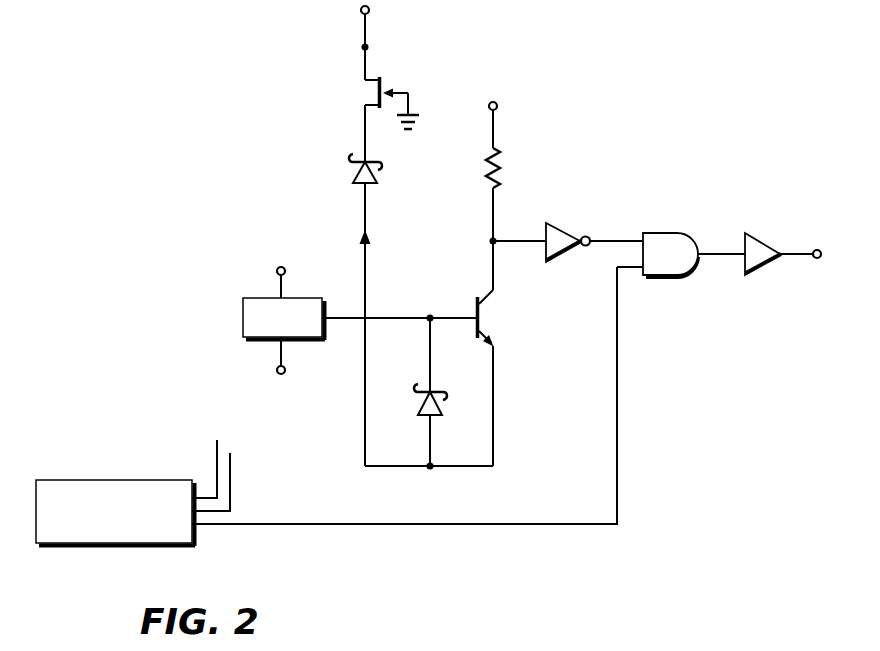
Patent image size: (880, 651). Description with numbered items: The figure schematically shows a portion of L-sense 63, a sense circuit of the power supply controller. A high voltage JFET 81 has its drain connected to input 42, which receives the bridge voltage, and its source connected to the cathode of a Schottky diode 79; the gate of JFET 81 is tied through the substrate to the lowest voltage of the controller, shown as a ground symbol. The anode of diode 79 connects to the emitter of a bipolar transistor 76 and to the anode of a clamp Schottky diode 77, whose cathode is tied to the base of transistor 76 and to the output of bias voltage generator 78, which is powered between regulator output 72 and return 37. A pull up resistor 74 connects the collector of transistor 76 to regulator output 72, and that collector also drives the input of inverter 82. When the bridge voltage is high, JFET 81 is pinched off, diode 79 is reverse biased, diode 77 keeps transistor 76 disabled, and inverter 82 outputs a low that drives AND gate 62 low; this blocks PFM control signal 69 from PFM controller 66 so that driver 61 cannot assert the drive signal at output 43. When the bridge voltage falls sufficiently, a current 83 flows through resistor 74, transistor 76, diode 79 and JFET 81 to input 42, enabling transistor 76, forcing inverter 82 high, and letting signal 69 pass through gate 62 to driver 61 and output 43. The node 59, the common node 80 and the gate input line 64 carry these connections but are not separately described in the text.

The input 42 is at (377, 12).
The node 59 is at (362, 47).
The high voltage JFET transistor 81 is at (362, 92).
The Schottky diode 79 is at (346, 171).
The current 83 is at (369, 238).
The output of regulator 72 is at (495, 100).
The pull up resistor 74 is at (505, 168).
The bipolar transistor 76 is at (500, 318).
The clamp Schottky diode 77 is at (438, 385).
The node 80 is at (430, 470).
The bias voltage generator 78 is at (242, 318).
The return 37 is at (282, 375).
The inverter 82 is at (570, 258).
The signal line 64 is at (616, 240).
The AND gate 62 is at (665, 280).
The driver 61 is at (768, 244).
The output 43 is at (817, 260).
The PFM controller 66 is at (110, 478).
The PFM control signal 69 is at (288, 523).
The L-sense 63 is at (416, 589).